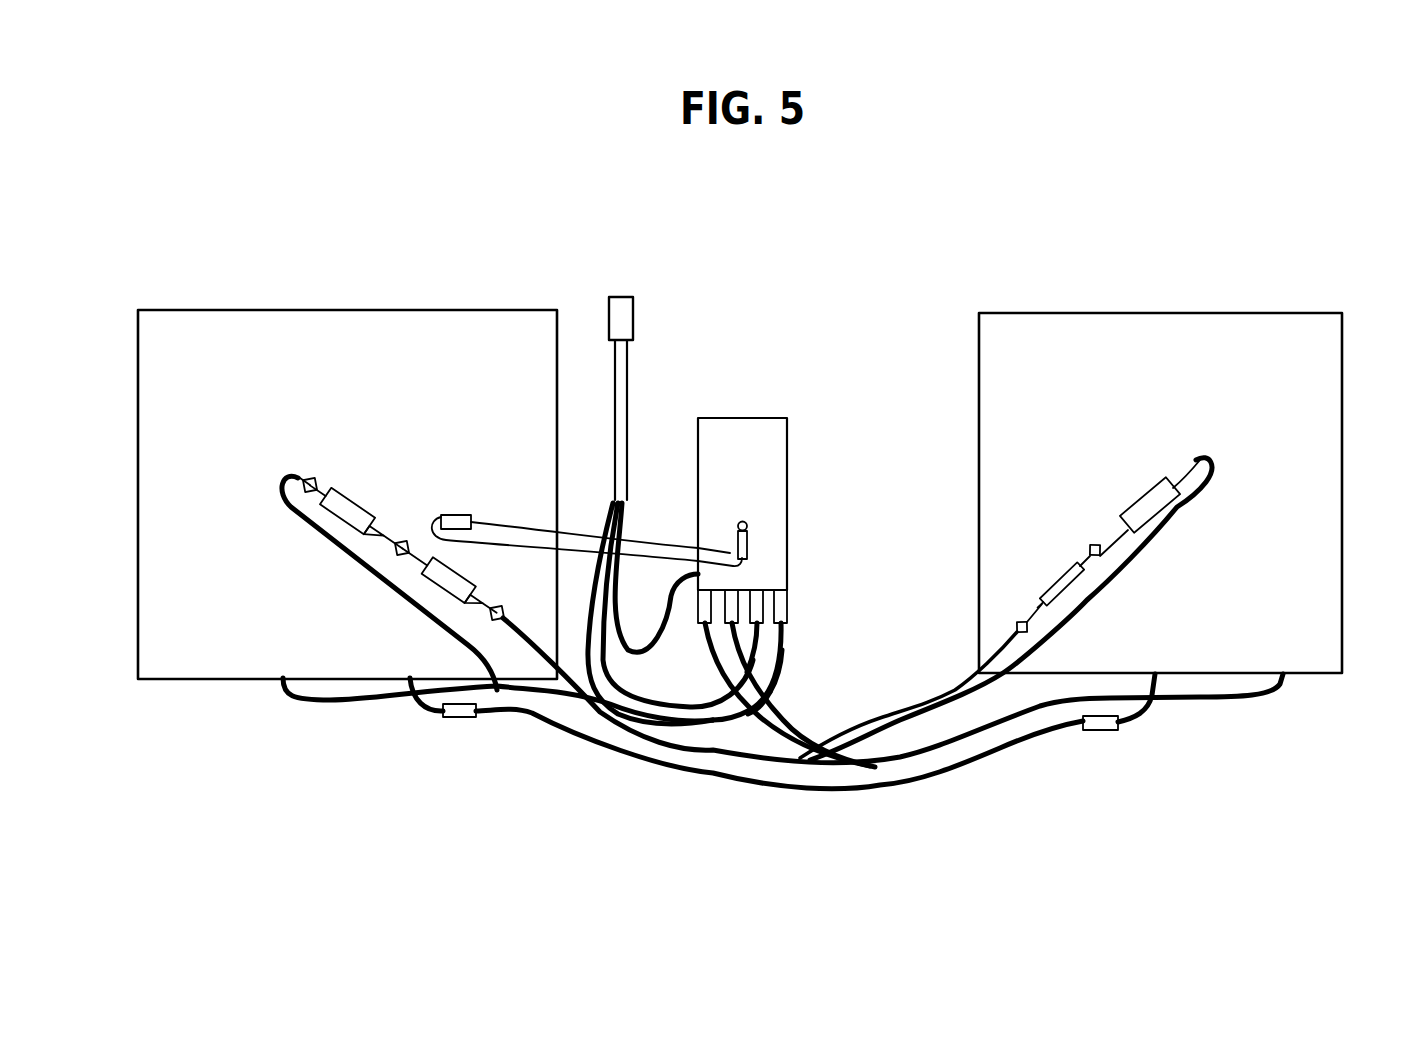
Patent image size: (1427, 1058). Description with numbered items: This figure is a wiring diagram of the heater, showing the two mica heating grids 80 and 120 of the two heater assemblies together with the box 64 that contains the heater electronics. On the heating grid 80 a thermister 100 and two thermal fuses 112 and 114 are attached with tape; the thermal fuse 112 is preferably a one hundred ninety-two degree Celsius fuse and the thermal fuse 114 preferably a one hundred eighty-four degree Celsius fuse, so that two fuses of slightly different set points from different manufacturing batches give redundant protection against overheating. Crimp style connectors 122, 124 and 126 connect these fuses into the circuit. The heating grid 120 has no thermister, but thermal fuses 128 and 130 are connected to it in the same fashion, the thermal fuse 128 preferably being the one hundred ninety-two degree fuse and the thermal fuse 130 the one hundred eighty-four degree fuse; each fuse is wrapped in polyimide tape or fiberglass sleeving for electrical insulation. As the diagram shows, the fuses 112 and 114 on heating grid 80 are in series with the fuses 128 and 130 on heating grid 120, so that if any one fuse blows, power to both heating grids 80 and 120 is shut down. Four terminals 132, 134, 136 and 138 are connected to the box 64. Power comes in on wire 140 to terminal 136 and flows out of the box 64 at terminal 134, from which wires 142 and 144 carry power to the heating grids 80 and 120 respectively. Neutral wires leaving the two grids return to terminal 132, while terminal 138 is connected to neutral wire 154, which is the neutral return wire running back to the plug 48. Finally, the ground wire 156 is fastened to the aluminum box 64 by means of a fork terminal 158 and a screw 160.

The plug 48 is at (616, 301).
The box 64 is at (752, 430).
The heating grid 80 is at (184, 662).
The thermister 100 is at (462, 515).
The thermal fuse 112 is at (349, 504).
The thermal fuse 114 is at (455, 589).
The heating grid 120 is at (1330, 482).
The connector 122 is at (304, 476).
The connector 124 is at (407, 538).
The connector 126 is at (510, 611).
The thermal fuse 128 is at (1143, 500).
The thermal fuse 130 is at (1060, 580).
The terminal 132 is at (700, 607).
The terminal 134 is at (758, 587).
The terminal 136 is at (760, 603).
The terminal 138 is at (783, 620).
The wire 140 is at (776, 692).
The wire 142 is at (416, 700).
The wire 144 is at (1142, 722).
The neutral wire 154 is at (781, 660).
The ground wire 156 is at (668, 585).
The fork terminal 158 is at (760, 548).
The screw 160 is at (746, 512).